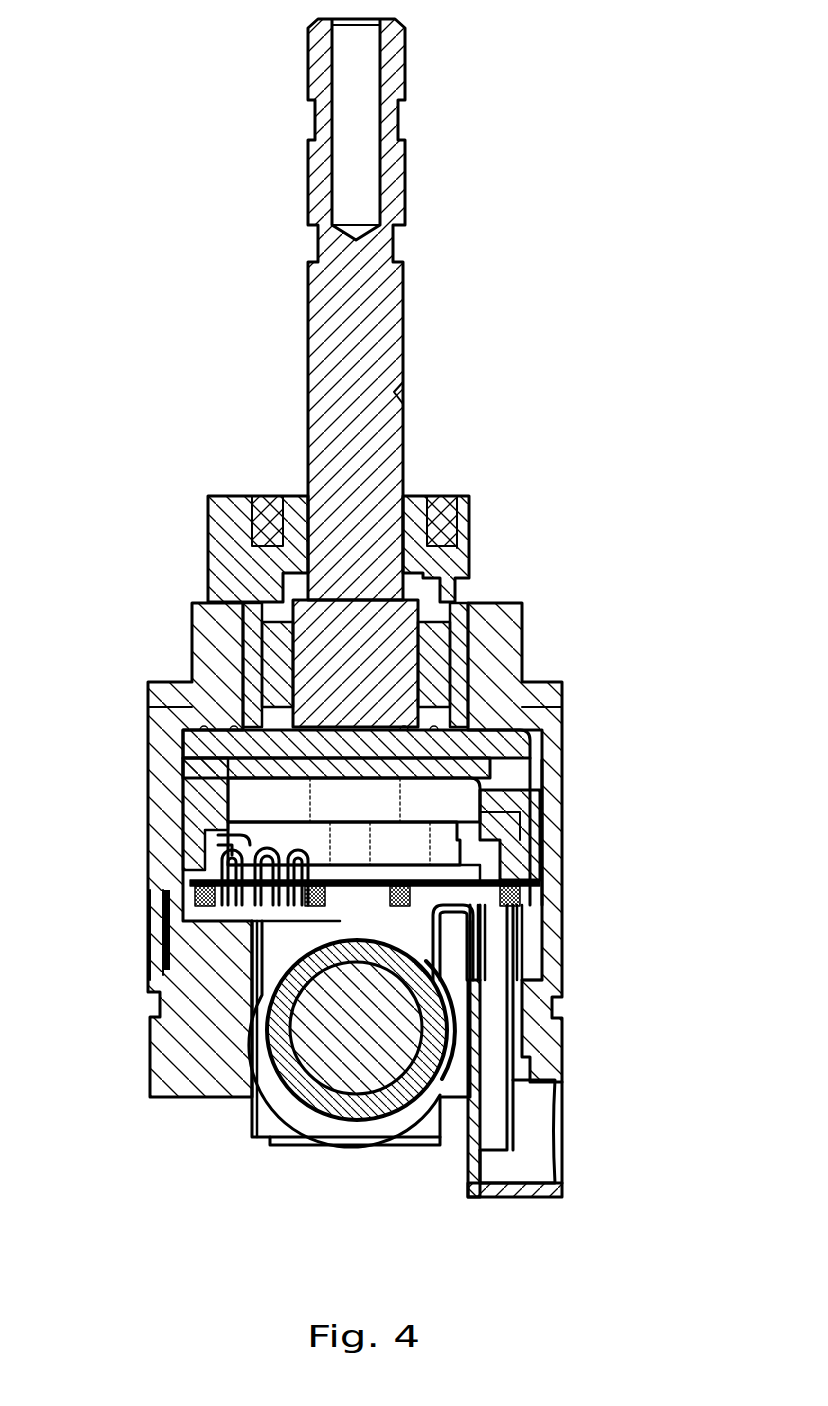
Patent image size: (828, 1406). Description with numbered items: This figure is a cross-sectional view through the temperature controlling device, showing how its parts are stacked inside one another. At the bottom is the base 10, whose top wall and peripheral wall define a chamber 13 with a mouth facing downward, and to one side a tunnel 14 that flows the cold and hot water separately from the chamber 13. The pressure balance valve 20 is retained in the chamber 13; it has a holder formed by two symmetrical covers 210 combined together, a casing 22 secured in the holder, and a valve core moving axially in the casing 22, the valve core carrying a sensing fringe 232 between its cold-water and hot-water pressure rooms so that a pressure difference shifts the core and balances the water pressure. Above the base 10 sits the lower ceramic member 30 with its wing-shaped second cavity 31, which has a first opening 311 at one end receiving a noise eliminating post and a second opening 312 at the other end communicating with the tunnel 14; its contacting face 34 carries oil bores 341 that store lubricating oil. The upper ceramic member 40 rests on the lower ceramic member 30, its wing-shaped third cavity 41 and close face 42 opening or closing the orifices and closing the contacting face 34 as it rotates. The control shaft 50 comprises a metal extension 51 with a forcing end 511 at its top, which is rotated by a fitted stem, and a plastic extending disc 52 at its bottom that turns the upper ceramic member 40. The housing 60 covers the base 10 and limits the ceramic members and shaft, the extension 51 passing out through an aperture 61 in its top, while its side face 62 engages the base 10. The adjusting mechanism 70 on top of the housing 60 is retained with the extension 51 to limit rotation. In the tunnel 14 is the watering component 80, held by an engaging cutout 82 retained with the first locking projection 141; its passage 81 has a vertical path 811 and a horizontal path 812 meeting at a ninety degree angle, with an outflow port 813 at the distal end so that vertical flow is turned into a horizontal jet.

The base 10 is at (563, 978).
The chamber 13 is at (270, 940).
The tunnel 14 is at (455, 940).
The first locking projection 141 is at (497, 1040).
The pressure balance valve 20 is at (292, 1152).
The casing 22 is at (270, 1118).
The covers 210 is at (328, 1128).
The sensing fringe 232 is at (350, 1070).
The lower ceramic member 30 is at (470, 860).
The second cavity 31 is at (480, 790).
The first opening 311 is at (230, 873).
The second opening 312 is at (530, 892).
The contacting face 34 is at (547, 815).
The oil bores 341 is at (215, 820).
The upper ceramic member 40 is at (210, 843).
The third cavity 41 is at (240, 795).
The close face 42 is at (500, 830).
The control shaft 50 is at (410, 292).
The extension 51 is at (385, 330).
The forcing end 511 is at (407, 70).
The extending disc 52 is at (545, 715).
The housing 60 is at (564, 746).
The aperture 61 is at (500, 660).
The side face 62 is at (548, 850).
The adjusting mechanism 70 is at (470, 519).
The watering component 80 is at (515, 1196).
The passage 81 is at (675, 1043).
The vertical path 811 is at (497, 1057).
The horizontal path 812 is at (538, 1110).
The outflow port 813 is at (558, 1160).
The engaging cutout 82 is at (465, 1040).